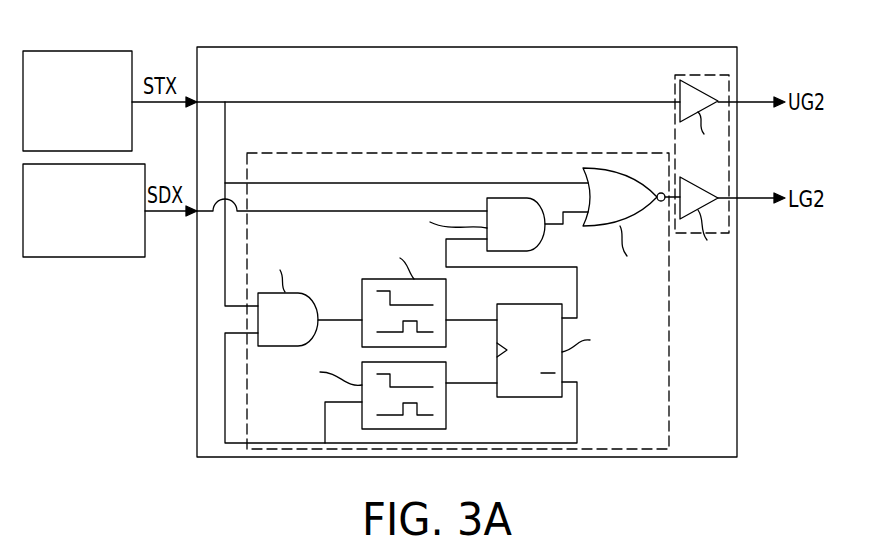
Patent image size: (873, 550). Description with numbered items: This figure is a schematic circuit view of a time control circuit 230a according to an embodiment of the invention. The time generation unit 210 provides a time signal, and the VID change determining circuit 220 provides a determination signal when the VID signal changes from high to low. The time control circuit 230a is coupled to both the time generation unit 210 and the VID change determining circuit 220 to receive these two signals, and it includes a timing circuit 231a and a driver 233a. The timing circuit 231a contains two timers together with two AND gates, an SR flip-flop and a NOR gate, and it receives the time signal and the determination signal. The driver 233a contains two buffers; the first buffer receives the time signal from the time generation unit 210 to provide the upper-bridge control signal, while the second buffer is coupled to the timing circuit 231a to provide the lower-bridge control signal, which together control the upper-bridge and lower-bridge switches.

The time generation unit 210 is at (77, 50).
The VID change determining circuit 220 is at (83, 258).
The time control circuit 230a is at (623, 47).
The timing circuit 231a is at (669, 428).
The driver 233a is at (702, 74).